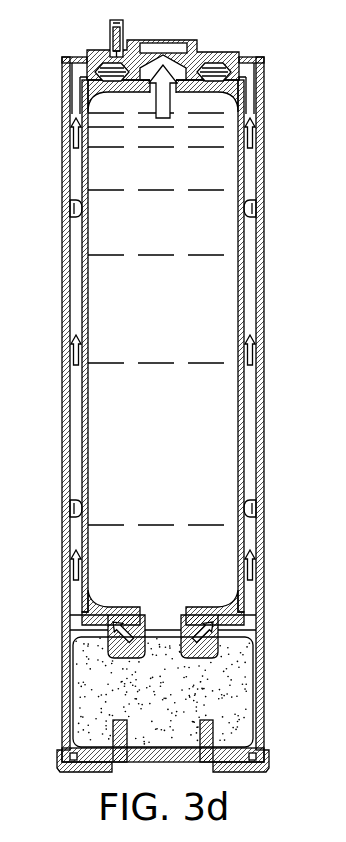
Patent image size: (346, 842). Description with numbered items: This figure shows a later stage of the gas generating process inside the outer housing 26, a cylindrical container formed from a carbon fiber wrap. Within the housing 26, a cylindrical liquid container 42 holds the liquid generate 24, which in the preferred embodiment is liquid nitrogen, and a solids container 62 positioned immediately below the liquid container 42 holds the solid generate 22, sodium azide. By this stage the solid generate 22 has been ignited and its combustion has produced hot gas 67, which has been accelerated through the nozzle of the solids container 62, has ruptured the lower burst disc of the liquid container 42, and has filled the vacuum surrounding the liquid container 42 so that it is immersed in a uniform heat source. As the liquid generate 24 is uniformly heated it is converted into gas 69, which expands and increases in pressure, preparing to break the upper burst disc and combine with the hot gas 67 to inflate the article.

The solid generate 22 is at (176, 703).
The liquid generate 24 is at (176, 413).
The outer housing 26 is at (238, 72).
The liquid container 42 is at (128, 160).
The solids container 62 is at (95, 697).
The hot gas 67 is at (252, 352).
The gas 69 is at (168, 84).